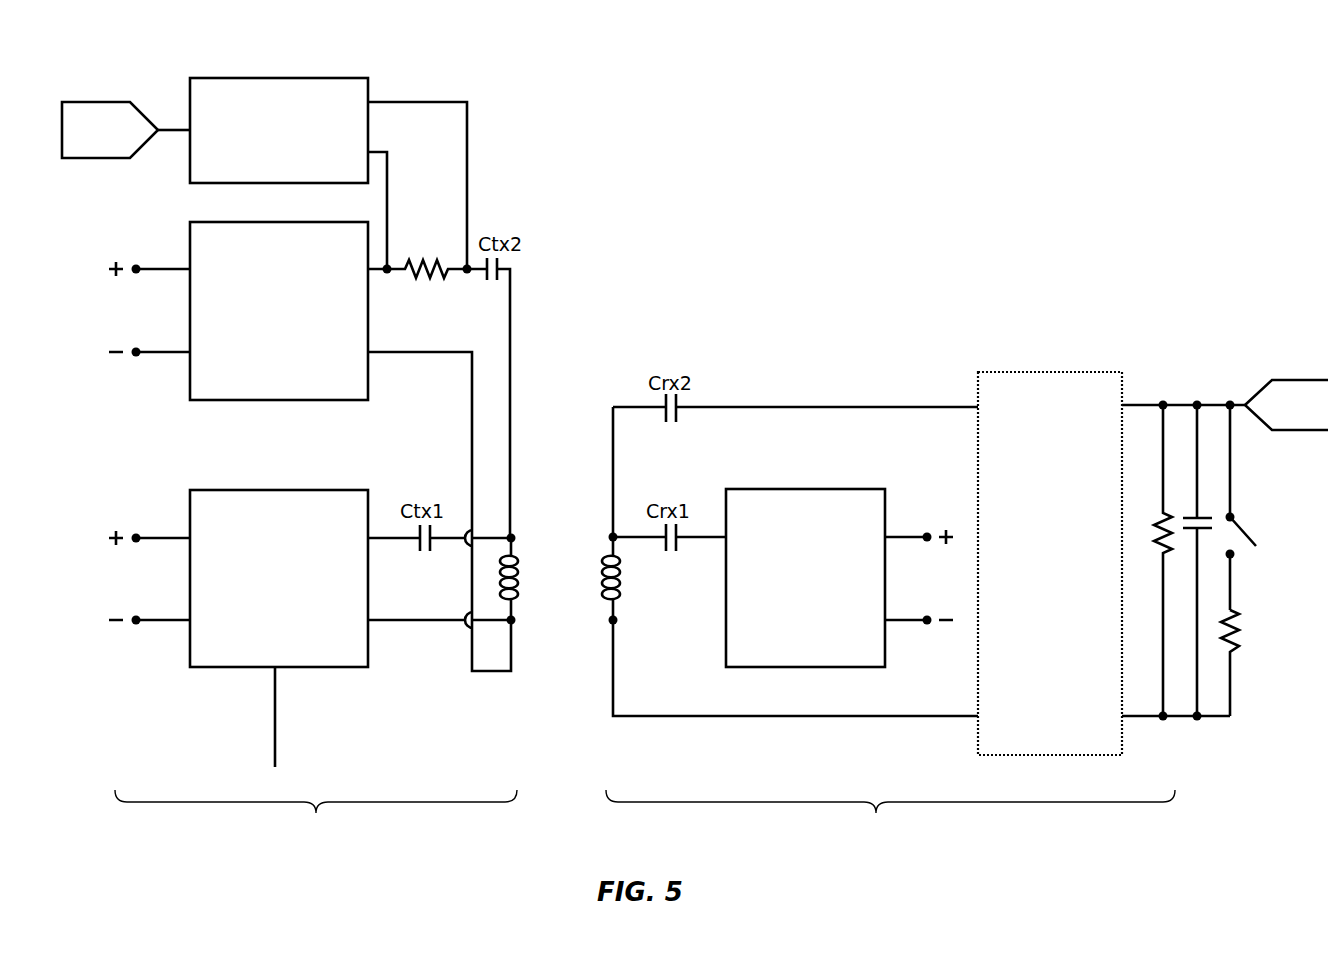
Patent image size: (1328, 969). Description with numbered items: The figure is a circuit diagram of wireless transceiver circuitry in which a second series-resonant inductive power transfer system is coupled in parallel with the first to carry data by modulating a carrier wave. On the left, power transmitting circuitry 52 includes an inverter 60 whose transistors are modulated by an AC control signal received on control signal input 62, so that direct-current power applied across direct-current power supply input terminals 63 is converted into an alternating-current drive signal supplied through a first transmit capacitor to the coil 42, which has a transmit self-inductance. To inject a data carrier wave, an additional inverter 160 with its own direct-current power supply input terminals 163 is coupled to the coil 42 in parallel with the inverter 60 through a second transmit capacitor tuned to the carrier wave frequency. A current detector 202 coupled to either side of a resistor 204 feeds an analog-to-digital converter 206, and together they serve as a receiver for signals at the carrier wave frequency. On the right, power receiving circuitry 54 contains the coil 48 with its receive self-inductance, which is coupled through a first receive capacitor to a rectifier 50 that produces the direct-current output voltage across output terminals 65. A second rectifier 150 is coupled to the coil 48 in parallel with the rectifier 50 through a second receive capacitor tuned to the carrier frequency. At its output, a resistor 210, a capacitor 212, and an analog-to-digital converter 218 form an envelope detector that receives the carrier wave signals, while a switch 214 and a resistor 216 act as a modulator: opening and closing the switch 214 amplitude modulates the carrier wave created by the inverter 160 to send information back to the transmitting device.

The analog-to-digital converter 206 is at (101, 102).
The current detector 202 is at (290, 78).
The inverter 160 is at (283, 400).
The direct-current power supply input terminals 163 is at (138, 277).
The resistor 204 is at (430, 289).
The inverter 60 is at (224, 668).
The direct-current power supply input terminals 63 is at (132, 650).
The control signal input 62 is at (277, 718).
The coil 42 is at (491, 581).
The power transmitting circuitry 52 is at (316, 816).
The coil 48 is at (637, 564).
The rectifier 50 is at (726, 648).
The output terminals 65 is at (928, 545).
The rectifier 150 is at (1050, 372).
The resistor 210 is at (1141, 518).
The capacitor 212 is at (1212, 541).
The switch 214 is at (1252, 520).
The resistor 216 is at (1255, 632).
The analog-to-digital converter 218 is at (1298, 380).
The power receiving circuitry 54 is at (890, 816).